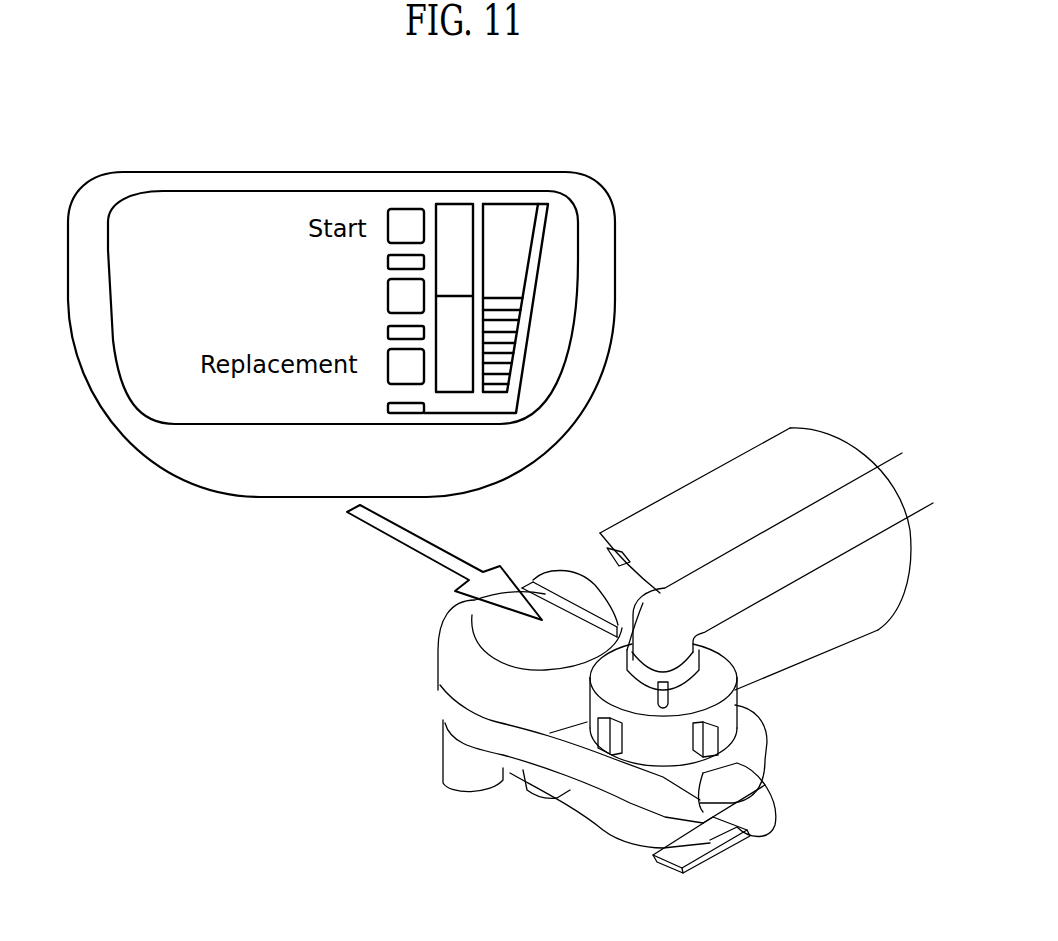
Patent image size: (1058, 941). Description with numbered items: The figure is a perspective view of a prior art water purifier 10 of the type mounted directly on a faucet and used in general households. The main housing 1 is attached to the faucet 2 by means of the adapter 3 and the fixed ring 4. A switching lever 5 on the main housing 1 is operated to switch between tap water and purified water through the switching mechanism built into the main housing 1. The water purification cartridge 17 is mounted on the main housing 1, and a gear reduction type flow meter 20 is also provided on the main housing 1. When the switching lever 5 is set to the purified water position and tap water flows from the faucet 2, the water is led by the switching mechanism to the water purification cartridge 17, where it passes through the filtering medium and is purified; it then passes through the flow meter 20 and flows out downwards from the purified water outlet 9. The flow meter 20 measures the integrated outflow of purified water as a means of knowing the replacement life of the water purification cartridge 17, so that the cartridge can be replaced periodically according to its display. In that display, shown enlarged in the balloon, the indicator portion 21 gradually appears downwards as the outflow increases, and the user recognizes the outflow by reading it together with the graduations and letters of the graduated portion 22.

The main housing 1 is at (541, 792).
The faucet 2 is at (712, 615).
The adapter 3 is at (693, 680).
The fixed ring 4 is at (653, 737).
The switching lever 5 is at (697, 847).
The purified water outlet 9 is at (450, 765).
The water purifier 10 is at (794, 390).
The water purification cartridge 17 is at (750, 473).
The flow meter 20 is at (570, 632).
The indicator portion 21 is at (502, 215).
The graduated portion 22 is at (402, 218).